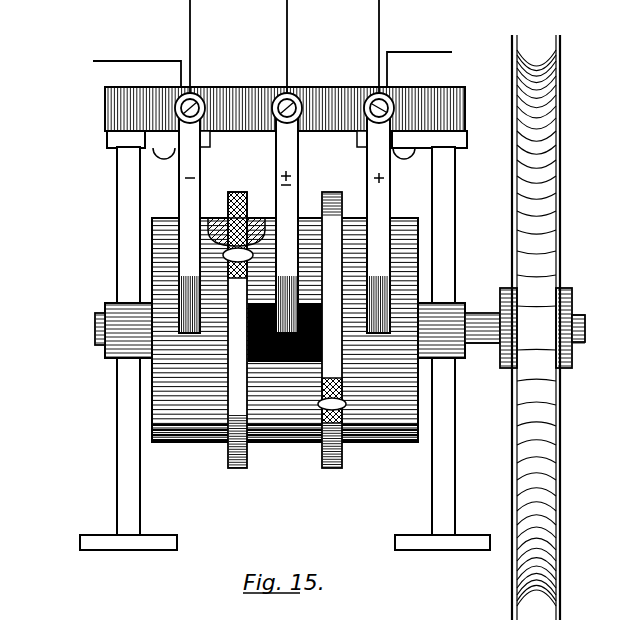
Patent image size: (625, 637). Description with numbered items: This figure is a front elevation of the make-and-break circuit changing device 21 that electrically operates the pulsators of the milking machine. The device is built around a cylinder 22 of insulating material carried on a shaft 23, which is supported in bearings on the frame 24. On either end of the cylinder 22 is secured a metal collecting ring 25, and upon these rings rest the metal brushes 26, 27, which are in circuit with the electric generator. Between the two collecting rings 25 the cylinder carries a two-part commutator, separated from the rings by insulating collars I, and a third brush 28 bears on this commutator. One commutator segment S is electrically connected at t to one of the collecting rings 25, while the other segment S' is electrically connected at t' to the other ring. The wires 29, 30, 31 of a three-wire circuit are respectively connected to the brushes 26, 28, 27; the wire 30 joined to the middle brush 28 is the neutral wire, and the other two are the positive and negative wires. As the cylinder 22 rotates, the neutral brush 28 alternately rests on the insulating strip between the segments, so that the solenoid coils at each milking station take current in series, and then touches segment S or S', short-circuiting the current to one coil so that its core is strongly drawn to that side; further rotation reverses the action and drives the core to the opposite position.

The make-and-break circuit changing device 21 is at (250, 318).
The cylinder 22 is at (302, 362).
The shaft 23 is at (487, 348).
The frame 24 is at (432, 502).
The collecting rings 25 is at (193, 435).
The brush 26 is at (192, 200).
The brush 27 is at (392, 205).
The third brush 28 is at (290, 200).
The wire 29 is at (193, 42).
The wire 30 is at (283, 47).
The wire 31 is at (388, 23).
The insulating collars I is at (225, 457).
The commutator segment S is at (322, 330).
The commutator segment S' is at (250, 330).
The connection point t is at (230, 276).
The connection point t' is at (346, 382).